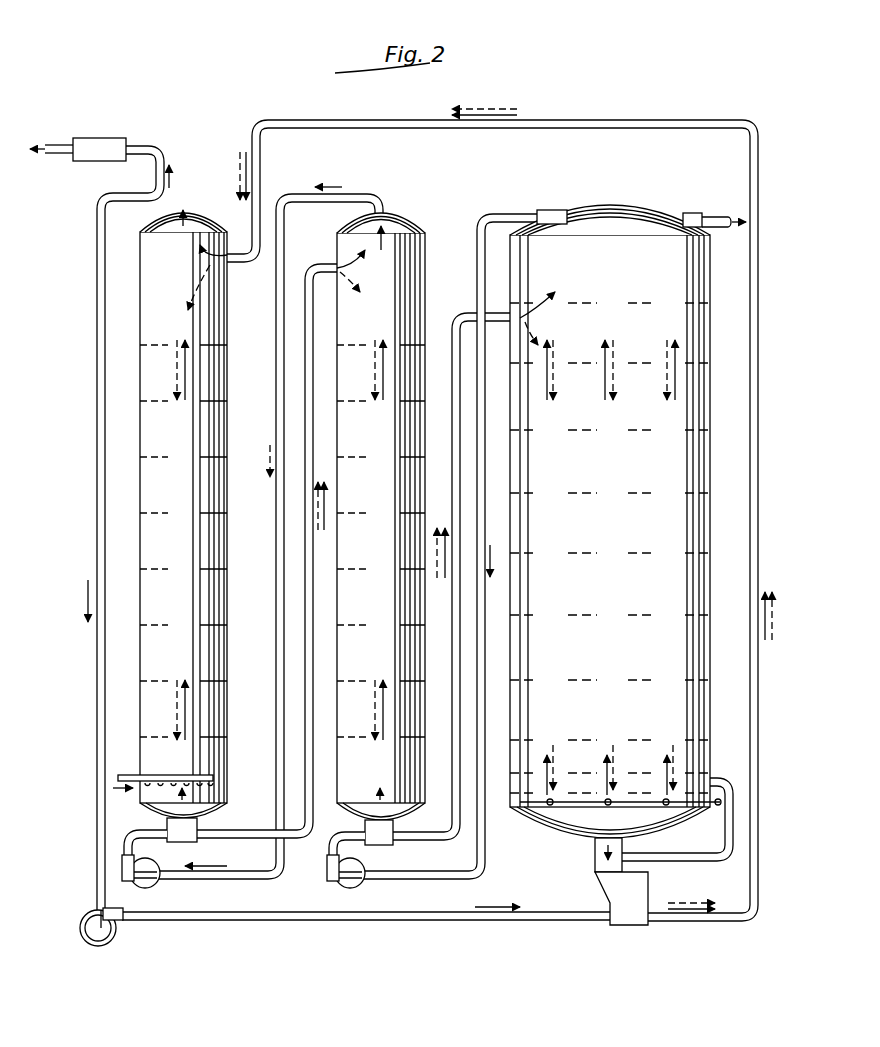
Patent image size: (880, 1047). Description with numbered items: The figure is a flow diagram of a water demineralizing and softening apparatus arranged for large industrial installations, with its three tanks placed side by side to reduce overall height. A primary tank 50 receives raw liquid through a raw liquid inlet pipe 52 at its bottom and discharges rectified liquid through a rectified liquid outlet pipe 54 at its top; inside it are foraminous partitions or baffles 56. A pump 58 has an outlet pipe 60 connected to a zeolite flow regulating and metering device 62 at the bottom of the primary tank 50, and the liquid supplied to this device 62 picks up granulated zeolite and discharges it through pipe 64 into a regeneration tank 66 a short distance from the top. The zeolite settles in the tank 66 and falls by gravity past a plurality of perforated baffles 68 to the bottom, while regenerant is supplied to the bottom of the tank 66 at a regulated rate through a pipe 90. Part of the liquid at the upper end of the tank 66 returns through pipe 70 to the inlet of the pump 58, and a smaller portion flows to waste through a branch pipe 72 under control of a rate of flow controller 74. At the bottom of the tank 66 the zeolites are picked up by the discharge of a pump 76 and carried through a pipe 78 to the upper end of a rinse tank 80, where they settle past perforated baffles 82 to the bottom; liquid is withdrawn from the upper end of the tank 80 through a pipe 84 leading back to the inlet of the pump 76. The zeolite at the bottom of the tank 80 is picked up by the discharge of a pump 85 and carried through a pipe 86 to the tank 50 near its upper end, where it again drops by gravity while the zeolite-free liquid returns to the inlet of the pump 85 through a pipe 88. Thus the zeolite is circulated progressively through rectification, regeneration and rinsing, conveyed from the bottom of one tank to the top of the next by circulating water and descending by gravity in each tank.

The primary tank 50 is at (712, 575).
The raw liquid inlet pipe 52 is at (745, 785).
The rectified liquid outlet pipe 54 is at (705, 214).
The foraminous partitions or baffles 56 is at (692, 487).
The pump 58 is at (110, 931).
The outlet pipe 60 is at (415, 920).
The zeolite flow regulating and metering device 62 is at (618, 886).
The pipe 64 is at (430, 100).
The regeneration tank 66 is at (140, 390).
The perforated baffles 68 is at (150, 568).
The pipe 70 is at (98, 462).
The branch pipe 72 is at (145, 148).
The rate of flow controller 74 is at (100, 155).
The pump 76 is at (146, 887).
The pipe 78 is at (308, 545).
The rinse tank 80 is at (337, 608).
The perforated baffles 82 is at (348, 456).
The pipe 84 is at (360, 195).
The pump 85 is at (352, 887).
The pipe 86 is at (448, 340).
The pipe 88 is at (481, 530).
The pipe 90 is at (125, 773).